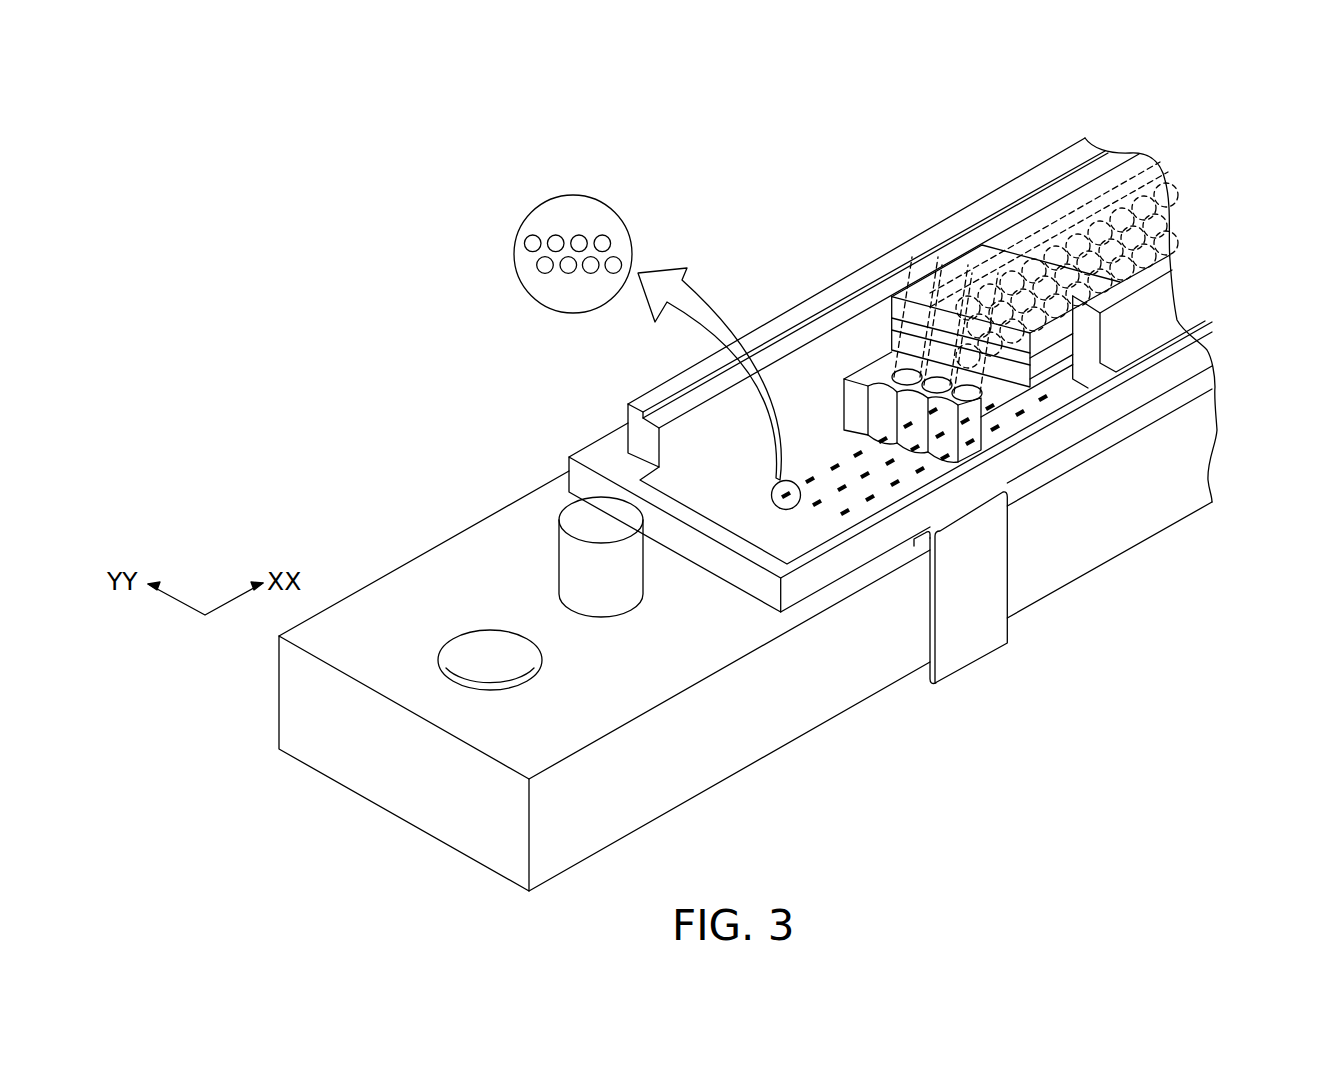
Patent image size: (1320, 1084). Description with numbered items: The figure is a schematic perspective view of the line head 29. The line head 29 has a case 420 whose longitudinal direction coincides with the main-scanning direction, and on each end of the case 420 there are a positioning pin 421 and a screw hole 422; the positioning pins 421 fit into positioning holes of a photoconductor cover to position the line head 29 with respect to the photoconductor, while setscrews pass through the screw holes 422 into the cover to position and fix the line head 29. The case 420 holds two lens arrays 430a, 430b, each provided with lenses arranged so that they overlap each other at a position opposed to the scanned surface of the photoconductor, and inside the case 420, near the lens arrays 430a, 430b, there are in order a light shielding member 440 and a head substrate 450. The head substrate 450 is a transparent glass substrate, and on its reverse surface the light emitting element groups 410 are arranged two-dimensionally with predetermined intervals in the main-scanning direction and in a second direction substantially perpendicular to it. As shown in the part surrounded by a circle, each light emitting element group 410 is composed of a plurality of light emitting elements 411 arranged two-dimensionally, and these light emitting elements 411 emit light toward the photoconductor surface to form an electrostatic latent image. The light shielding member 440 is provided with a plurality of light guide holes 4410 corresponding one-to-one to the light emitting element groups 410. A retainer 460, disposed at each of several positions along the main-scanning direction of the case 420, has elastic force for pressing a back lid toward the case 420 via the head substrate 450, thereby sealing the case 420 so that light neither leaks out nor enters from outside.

The line head 29 is at (763, 154).
The light emitting element groups 410 is at (774, 502).
The light emitting elements 411 is at (582, 234).
The case 420 is at (1192, 358).
The positioning pin 421 is at (582, 518).
The screw hole 422 is at (484, 671).
The lens array 430a is at (1047, 328).
The lens array 430b is at (1047, 366).
The light shielding member 440 is at (1045, 380).
The light guide holes 4410 is at (900, 372).
The head substrate 450 is at (795, 537).
The retainer 460 is at (965, 646).